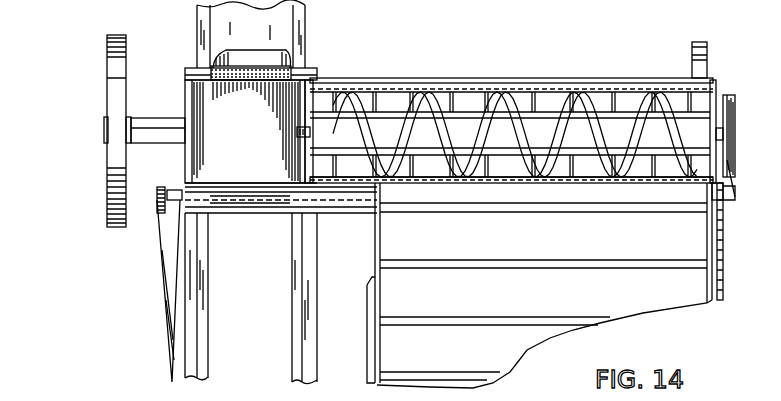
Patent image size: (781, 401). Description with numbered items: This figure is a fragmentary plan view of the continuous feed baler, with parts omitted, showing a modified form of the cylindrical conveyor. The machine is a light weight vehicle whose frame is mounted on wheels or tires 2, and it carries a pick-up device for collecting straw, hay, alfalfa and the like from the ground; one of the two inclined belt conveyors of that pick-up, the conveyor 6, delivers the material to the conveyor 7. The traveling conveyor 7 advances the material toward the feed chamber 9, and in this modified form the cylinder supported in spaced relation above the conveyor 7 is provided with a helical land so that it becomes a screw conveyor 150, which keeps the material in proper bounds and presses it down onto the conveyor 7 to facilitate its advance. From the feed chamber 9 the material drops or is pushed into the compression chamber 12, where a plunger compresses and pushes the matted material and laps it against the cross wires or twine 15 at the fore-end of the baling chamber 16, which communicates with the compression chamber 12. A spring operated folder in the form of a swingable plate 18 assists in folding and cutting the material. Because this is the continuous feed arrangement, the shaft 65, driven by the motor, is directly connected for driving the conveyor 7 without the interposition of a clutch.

The wheels or tires 2 is at (107, 50).
The inclined belt conveyor 6 is at (545, 285).
The conveyor 7 is at (582, 102).
The feed chamber 9 is at (251, 131).
The compression chamber 12 is at (274, 131).
The cross wires or twine 15 is at (272, 68).
The baling chamber 16 is at (251, 34).
The swingable plate folder 18 is at (277, 80).
The shaft 65 is at (277, 207).
The screw conveyor 150 is at (422, 102).